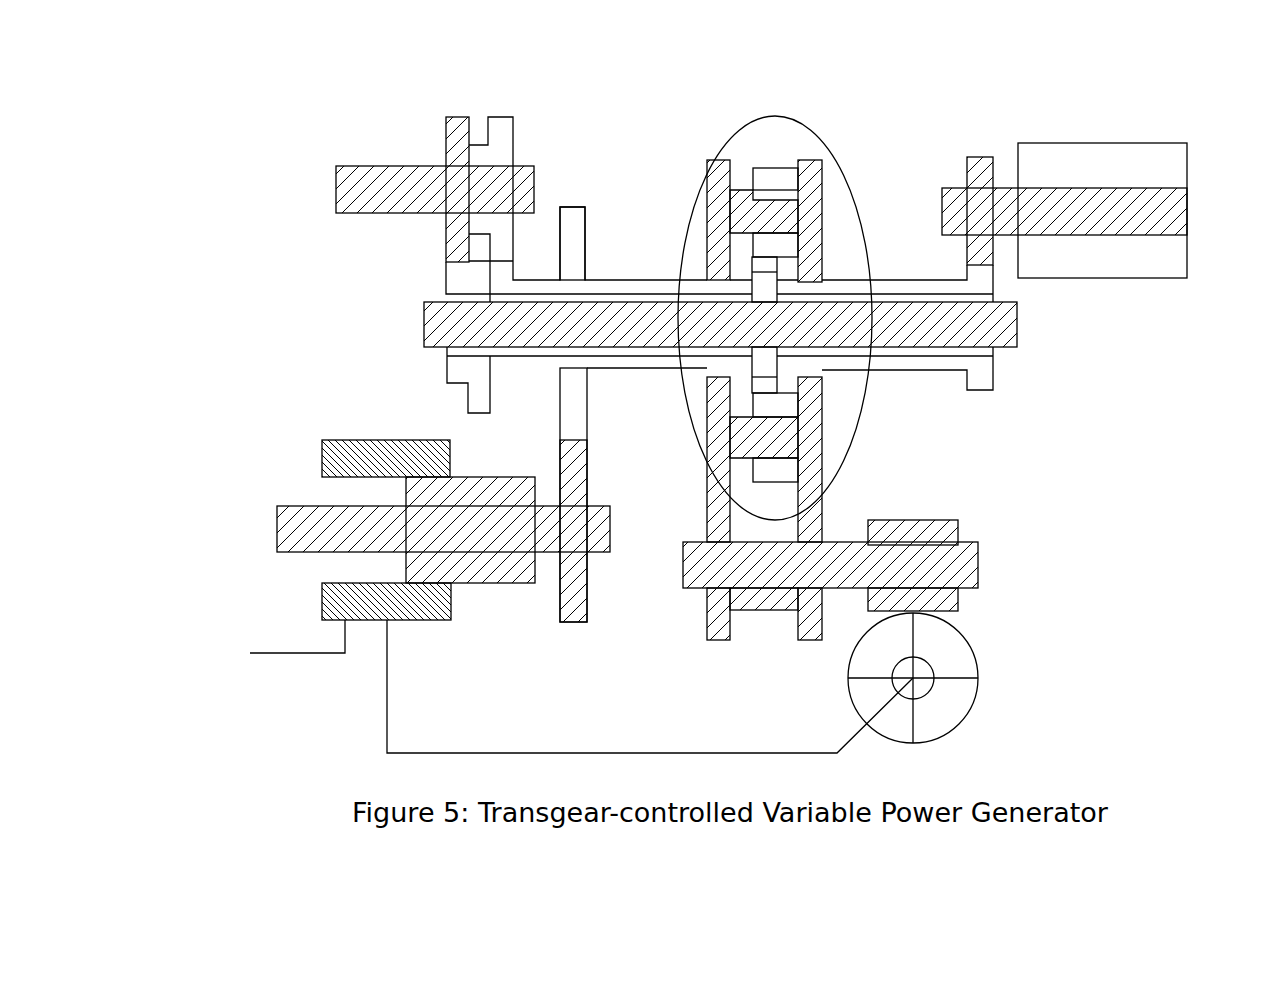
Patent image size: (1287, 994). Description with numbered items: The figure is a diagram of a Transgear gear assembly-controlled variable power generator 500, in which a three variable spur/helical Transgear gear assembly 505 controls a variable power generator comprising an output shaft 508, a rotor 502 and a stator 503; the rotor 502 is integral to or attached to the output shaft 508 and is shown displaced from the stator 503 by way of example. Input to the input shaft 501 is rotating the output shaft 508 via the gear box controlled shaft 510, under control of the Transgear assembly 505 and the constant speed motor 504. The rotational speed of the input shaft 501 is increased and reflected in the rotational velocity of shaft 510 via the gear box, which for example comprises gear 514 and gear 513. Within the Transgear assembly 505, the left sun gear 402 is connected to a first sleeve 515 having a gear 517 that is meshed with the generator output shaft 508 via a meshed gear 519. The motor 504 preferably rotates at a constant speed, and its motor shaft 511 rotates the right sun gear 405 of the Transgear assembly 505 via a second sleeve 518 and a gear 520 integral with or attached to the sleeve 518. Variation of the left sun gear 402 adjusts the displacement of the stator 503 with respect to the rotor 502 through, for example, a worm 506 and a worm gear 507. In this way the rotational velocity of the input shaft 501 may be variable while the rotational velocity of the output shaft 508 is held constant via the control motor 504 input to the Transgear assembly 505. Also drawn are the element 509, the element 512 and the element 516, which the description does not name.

The Transgear-controlled variable power generator 500 is at (417, 105).
The input shaft 501 is at (378, 187).
The rotor 502 is at (485, 585).
The stator 503 is at (417, 620).
The constant speed motor 504 is at (1157, 163).
The Transgear gear assembly 505 is at (778, 113).
The worm 506 is at (940, 522).
The worm gear 507 is at (958, 703).
The output shaft 508 is at (300, 532).
The housing 509 is at (980, 575).
The gear box controlled shaft 510 is at (420, 330).
The motor shaft 511 is at (1168, 217).
The gear 512 is at (457, 131).
The gear 513 is at (497, 130).
The gear 514 is at (457, 273).
The first sleeve 515 is at (618, 362).
The frame 516 is at (507, 380).
The gear 517 is at (580, 422).
The second sleeve 518 is at (932, 373).
The meshed gear 519 is at (600, 582).
The gear 520 is at (980, 373).
The left sun gear 402 is at (738, 272).
The right sun gear 405 is at (790, 270).